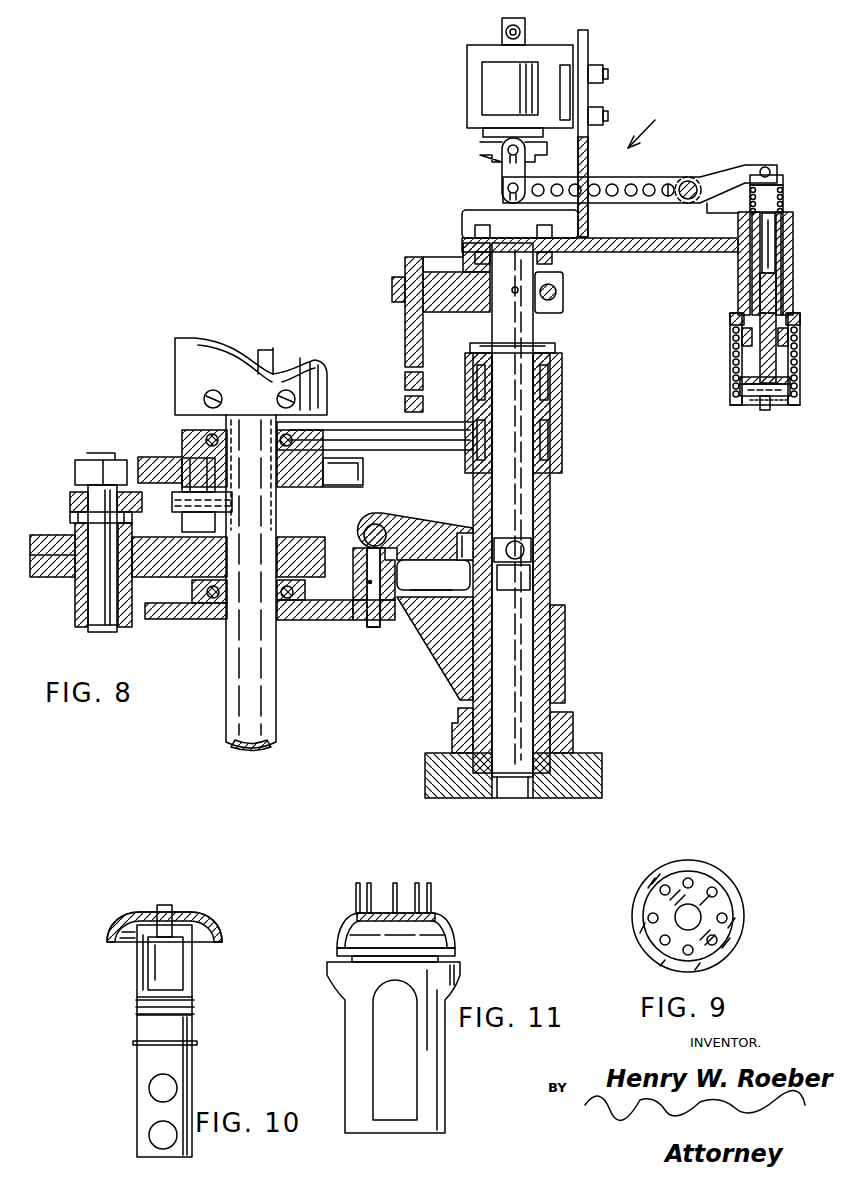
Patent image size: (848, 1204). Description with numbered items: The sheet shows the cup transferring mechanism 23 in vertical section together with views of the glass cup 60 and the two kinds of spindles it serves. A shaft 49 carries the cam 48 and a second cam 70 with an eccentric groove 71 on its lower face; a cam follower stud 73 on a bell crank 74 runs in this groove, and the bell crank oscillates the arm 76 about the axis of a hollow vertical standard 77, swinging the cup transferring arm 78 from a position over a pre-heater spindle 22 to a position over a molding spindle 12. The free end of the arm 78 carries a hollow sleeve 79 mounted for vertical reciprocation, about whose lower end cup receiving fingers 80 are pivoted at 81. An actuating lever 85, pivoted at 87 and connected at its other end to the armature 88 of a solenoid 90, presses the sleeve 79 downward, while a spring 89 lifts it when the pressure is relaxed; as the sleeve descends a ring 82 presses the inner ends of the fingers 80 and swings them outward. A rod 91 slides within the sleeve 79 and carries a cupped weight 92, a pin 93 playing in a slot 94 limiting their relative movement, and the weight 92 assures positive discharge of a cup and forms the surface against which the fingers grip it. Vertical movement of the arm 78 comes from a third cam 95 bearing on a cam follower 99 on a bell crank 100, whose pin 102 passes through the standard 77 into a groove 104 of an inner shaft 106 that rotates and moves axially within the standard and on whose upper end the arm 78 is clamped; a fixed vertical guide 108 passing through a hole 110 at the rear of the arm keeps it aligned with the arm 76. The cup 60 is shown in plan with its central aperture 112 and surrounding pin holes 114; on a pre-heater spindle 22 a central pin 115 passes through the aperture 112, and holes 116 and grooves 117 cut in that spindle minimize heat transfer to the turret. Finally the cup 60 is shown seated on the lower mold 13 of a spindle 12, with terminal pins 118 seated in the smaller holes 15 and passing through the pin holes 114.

In FIG. 11, the spindle 12 is at (352, 1032).
In FIG. 11, the cap piece or lower mold 13 is at (455, 940).
In FIG. 11, the smaller holes 15 is at (338, 930).
In FIG. 10, the cup-receiving spindle 22 is at (137, 976).
In FIG. 8, the transferring mechanism 23 is at (650, 123).
In FIG. 8, the cam 48 is at (300, 362).
In FIG. 8, the shaft 49 is at (258, 352).
In FIG. 8, the glass cup 60 is at (778, 405).
In FIG. 10, the glass cup 60 is at (212, 922).
In FIG. 11, the glass cup 60 is at (445, 925).
In FIG. 9, the glass cup 60 is at (735, 935).
In FIG. 8, the second cam 70 is at (363, 468).
In FIG. 8, the eccentric groove 71 is at (338, 480).
In FIG. 8, the cam follower stud 73 is at (182, 462).
In FIG. 8, the bell crank 74 is at (70, 497).
In FIG. 8, the arm 76 is at (345, 422).
In FIG. 8, the hollow vertical standard 77 is at (473, 492).
In FIG. 8, the cup transferring arm 78 is at (680, 252).
In FIG. 8, the hollow sleeve 79 is at (740, 265).
In FIG. 8, the cup receiving fingers 80 is at (728, 350).
In FIG. 8, the pivot 81 is at (735, 334).
In FIG. 8, the ring 82 is at (735, 344).
In FIG. 8, the actuating lever 85 is at (718, 175).
In FIG. 8, the pivot 87 is at (690, 180).
In FIG. 8, the armature 88 is at (485, 152).
In FIG. 8, the spring 89 is at (780, 178).
In FIG. 8, the solenoid 90 is at (482, 86).
In FIG. 8, the rod 91 is at (758, 372).
In FIG. 8, the cupped weight 92 is at (760, 398).
In FIG. 8, the pin 93 is at (758, 296).
In FIG. 8, the slot 94 is at (783, 278).
In FIG. 8, the third cam 95 is at (330, 622).
In FIG. 8, the cam follower 99 is at (385, 622).
In FIG. 8, the bell crank 100 is at (418, 530).
In FIG. 8, the pin 102 is at (540, 544).
In FIG. 8, the groove 104 is at (540, 560).
In FIG. 8, the inner shaft 106 is at (533, 498).
In FIG. 8, the fixed vertical guide 108 is at (405, 332).
In FIG. 8, the hole 110 is at (448, 312).
In FIG. 11, the central aperture 112 is at (400, 912).
In FIG. 9, the central aperture 112 is at (696, 908).
In FIG. 10, the pin holes 114 is at (127, 912).
In FIG. 11, the pin holes 114 is at (432, 915).
In FIG. 9, the pin holes 114 is at (688, 880).
In FIG. 10, the central pin 115 is at (163, 903).
In FIG. 10, the holes 116 is at (168, 1133).
In FIG. 10, the grooves 117 is at (192, 1010).
In FIG. 11, the terminal pins 118 is at (371, 884).